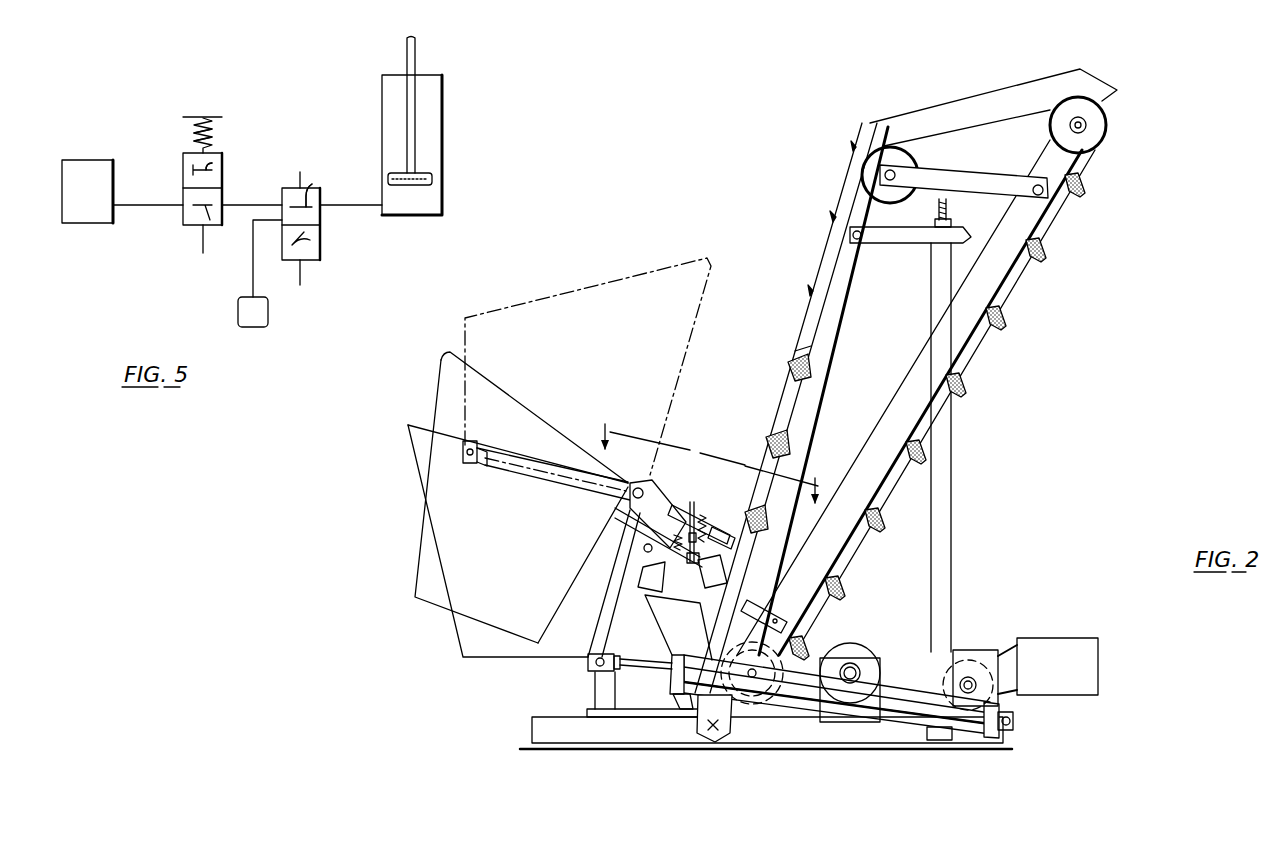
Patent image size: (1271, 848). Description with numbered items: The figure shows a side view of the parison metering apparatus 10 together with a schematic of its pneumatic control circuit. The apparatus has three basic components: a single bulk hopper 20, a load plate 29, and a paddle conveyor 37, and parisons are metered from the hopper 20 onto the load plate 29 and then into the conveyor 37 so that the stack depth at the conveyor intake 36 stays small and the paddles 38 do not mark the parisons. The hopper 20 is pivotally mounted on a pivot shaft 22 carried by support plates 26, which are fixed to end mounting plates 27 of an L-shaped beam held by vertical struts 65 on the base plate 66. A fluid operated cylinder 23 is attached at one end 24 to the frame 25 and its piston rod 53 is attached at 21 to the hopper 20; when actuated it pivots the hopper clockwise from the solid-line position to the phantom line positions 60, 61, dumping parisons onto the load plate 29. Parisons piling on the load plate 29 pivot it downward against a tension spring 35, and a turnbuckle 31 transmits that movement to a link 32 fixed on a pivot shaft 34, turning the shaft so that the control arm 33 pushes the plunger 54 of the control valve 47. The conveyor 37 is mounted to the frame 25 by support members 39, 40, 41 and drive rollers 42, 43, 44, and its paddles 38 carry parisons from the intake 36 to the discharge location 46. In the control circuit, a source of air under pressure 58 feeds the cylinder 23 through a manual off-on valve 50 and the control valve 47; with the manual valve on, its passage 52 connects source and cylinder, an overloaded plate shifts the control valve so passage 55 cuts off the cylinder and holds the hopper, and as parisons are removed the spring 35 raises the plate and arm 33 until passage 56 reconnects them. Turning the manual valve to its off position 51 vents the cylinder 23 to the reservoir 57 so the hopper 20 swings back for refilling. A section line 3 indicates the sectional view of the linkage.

In FIG. 2, the metering apparatus 10 is at (1012, 520).
In FIG. 2, the bulk hopper 20 is at (468, 638).
In FIG. 2, the rod attachment point 21 is at (596, 670).
In FIG. 2, the pivot shaft 22 is at (638, 488).
In FIG. 5, the fluid operated cylinder 23 is at (443, 117).
In FIG. 2, the fluid operated cylinder 23 is at (895, 720).
In FIG. 2, the cylinder end 24 is at (1014, 722).
In FIG. 2, the frame 25 is at (963, 737).
In FIG. 2, the support plates 26 is at (655, 496).
In FIG. 2, the end mounting plates 27 is at (640, 527).
In FIG. 5, the load plate 29 is at (190, 115).
In FIG. 2, the load plate 29 is at (702, 514).
In FIG. 2, the turnbuckle 31 is at (708, 522).
In FIG. 2, the link 32 is at (682, 568).
In FIG. 2, the control arm 33 is at (686, 556).
In FIG. 2, the pivot shaft 34 is at (644, 548).
In FIG. 5, the tension spring 35 is at (188, 130).
In FIG. 2, the tension spring 35 is at (690, 504).
In FIG. 2, the conveyor intake 36 is at (733, 530).
In FIG. 2, the conveyor 37 is at (860, 325).
In FIG. 2, the conveyor paddles 38 is at (796, 365).
In FIG. 2, the support member 39 is at (900, 244).
In FIG. 2, the support member 40 is at (1005, 180).
In FIG. 2, the support member 41 is at (953, 476).
In FIG. 2, the drive roller 42 is at (892, 160).
In FIG. 2, the drive roller 43 is at (1106, 125).
In FIG. 2, the drive roller 44 is at (757, 705).
In FIG. 2, the discharge location 46 is at (1118, 92).
In FIG. 5, the control valve 47 is at (178, 220).
In FIG. 2, the control valve 47 is at (638, 577).
In FIG. 5, the manual off-on valve 50 is at (332, 265).
In FIG. 5, the off position 51 is at (322, 248).
In FIG. 5, the valve passage 52 is at (306, 190).
In FIG. 5, the piston rod 53 is at (405, 55).
In FIG. 2, the piston rod 53 is at (645, 667).
In FIG. 5, the plunger 54 is at (216, 136).
In FIG. 2, the plunger 54 is at (676, 552).
In FIG. 5, the valve passage 55 is at (222, 165).
In FIG. 5, the valve passage 56 is at (208, 220).
In FIG. 5, the reservoir 57 is at (238, 315).
In FIG. 5, the source of air under pressure 58 is at (80, 223).
In FIG. 2, the phantom line position 60 is at (578, 300).
In FIG. 2, the phantom line position 61 is at (440, 378).
In FIG. 2, the vertical struts 65 is at (600, 701).
In FIG. 2, the base plate 66 is at (656, 716).
In FIG. 2, the section line 3- 3 is at (714, 451).